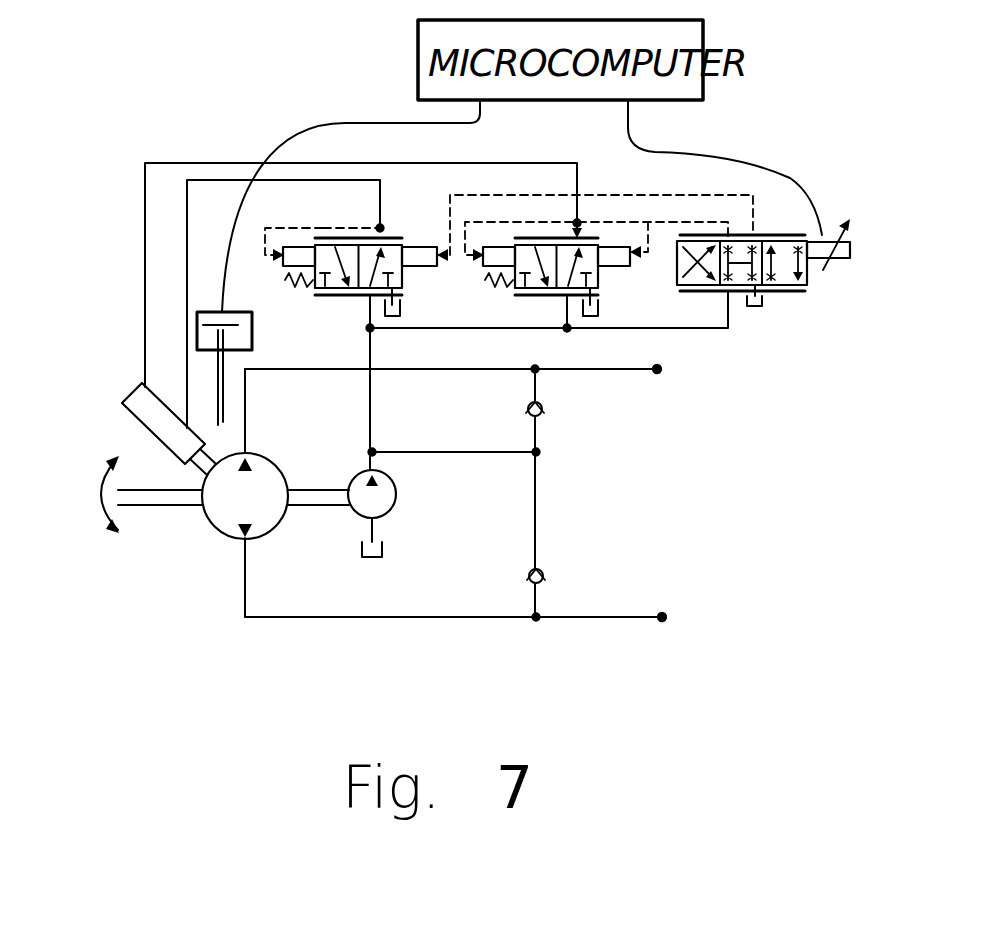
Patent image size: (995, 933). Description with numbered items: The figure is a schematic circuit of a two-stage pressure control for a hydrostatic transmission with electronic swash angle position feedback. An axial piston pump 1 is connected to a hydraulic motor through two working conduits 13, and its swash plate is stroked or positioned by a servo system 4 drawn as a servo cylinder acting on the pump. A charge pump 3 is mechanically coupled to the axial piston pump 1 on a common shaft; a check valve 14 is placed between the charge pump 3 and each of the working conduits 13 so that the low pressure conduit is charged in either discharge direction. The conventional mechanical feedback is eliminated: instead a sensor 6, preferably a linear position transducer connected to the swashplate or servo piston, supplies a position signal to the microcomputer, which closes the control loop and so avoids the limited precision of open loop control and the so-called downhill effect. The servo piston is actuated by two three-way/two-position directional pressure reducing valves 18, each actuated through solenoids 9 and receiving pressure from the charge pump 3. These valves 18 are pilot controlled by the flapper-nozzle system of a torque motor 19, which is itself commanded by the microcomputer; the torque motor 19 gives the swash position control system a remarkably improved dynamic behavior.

The axial piston pump 1 is at (267, 535).
The charge pump 3 is at (386, 515).
The servo system 4 is at (137, 390).
The sensor 6 is at (252, 328).
The solenoids 9 is at (283, 270).
The working conduits 13 is at (625, 369).
The check valve 14 is at (543, 413).
The three-way/two-position directional pressure reducing valves 18 is at (506, 231).
The torque motor 19 is at (790, 228).